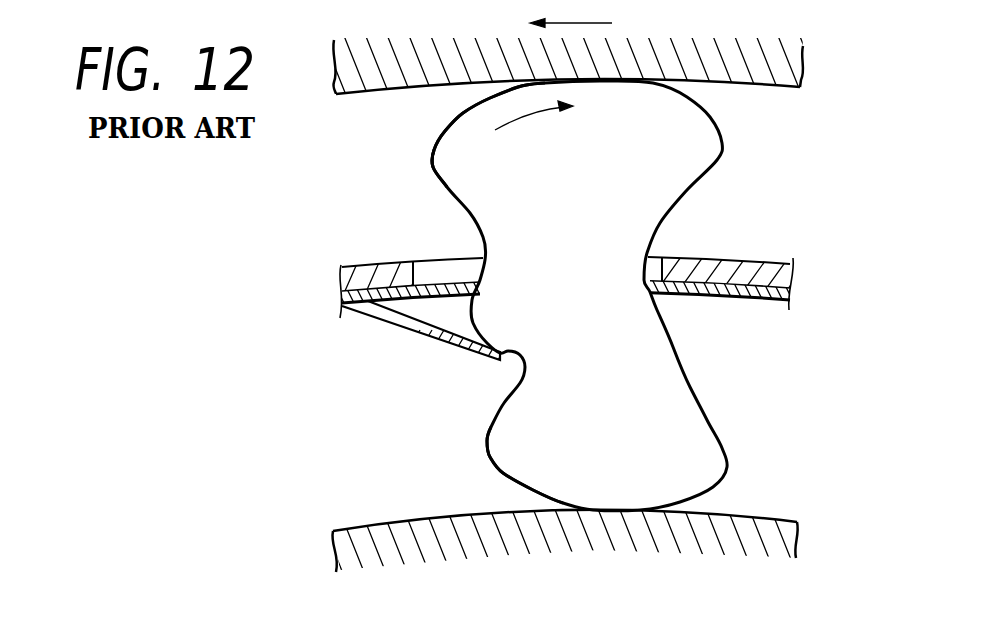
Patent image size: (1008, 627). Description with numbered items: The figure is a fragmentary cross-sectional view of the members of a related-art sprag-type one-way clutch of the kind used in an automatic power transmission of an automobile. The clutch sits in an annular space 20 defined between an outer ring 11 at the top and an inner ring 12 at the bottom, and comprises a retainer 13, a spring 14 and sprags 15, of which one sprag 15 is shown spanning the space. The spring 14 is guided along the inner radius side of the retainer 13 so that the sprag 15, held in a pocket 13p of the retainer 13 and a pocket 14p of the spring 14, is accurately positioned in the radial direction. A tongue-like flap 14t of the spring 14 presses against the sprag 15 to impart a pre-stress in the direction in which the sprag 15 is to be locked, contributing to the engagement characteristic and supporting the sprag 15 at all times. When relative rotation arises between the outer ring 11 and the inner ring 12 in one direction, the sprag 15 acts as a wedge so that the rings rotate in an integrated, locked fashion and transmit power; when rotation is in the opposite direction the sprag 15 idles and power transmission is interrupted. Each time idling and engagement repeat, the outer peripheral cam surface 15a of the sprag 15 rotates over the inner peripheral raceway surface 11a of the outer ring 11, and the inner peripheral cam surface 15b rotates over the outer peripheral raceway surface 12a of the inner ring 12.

The outer ring 11 is at (683, 48).
The inner peripheral surface (raceway surface) 11a is at (773, 88).
The inner ring 12 is at (766, 532).
The outer peripheral surface (raceway surface) 12a is at (378, 525).
The retainer 13 is at (757, 264).
The pocket of the retainer 13p is at (446, 270).
The spring 14 is at (763, 293).
The pocket of the spring 14p is at (437, 316).
The tongue-like flap 14t is at (412, 331).
The sprag 15 is at (718, 141).
The outer peripheral cam surface 15a is at (452, 126).
The inner peripheral cam surface 15b is at (510, 479).
The annular space 20 is at (380, 177).